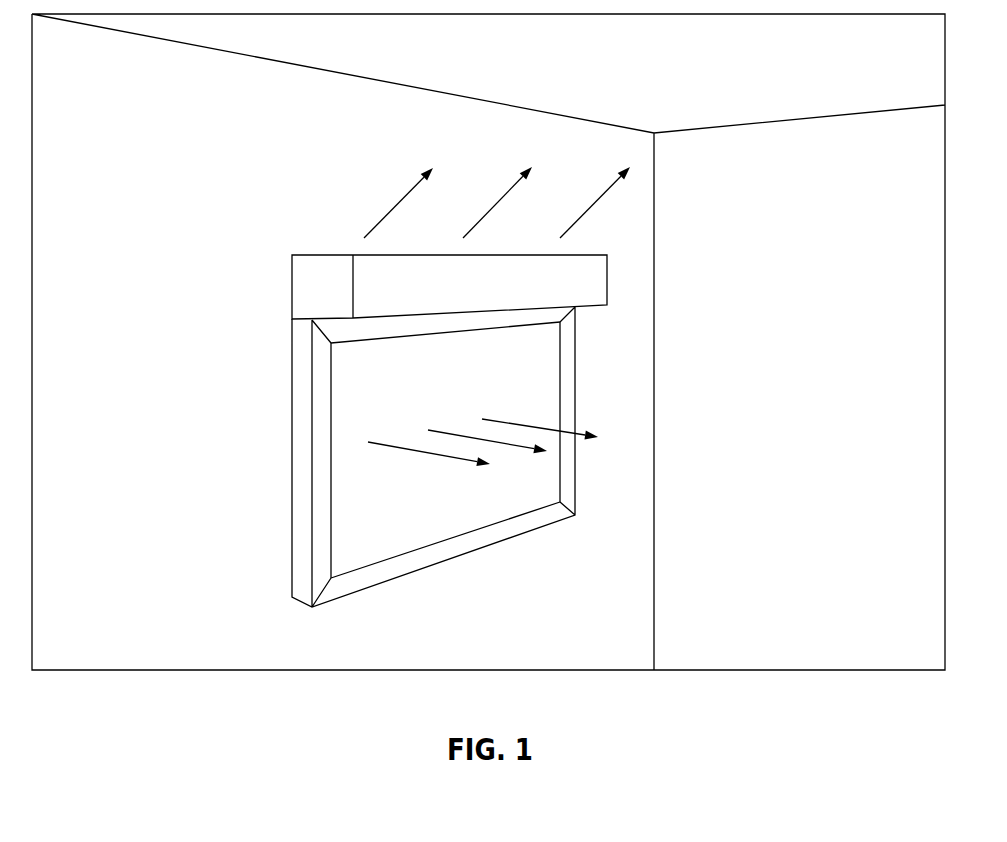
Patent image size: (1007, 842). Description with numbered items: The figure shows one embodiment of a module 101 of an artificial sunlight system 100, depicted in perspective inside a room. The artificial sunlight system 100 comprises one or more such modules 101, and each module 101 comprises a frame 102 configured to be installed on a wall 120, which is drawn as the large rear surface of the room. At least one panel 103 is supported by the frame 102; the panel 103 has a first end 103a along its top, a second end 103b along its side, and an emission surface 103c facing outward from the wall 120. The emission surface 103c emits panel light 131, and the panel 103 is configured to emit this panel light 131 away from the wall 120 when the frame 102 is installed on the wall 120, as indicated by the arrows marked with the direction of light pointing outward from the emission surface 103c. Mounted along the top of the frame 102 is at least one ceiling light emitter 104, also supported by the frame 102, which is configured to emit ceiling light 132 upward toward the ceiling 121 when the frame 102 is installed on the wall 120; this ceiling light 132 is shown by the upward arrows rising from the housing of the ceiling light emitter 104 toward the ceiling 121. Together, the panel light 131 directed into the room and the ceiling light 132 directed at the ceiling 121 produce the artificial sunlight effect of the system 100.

The artificial sunlight system 100 is at (191, 214).
The module 101 is at (290, 382).
The frame 102 is at (307, 278).
The panel 103 is at (551, 472).
The first end 103a is at (552, 333).
The second end 103b is at (550, 495).
The emission surface 103c is at (388, 530).
The ceiling light emitter 104 is at (350, 255).
The wall 120 is at (177, 490).
The ceiling 121 is at (755, 80).
The panel light 131 is at (407, 448).
The ceiling light 132 is at (413, 187).